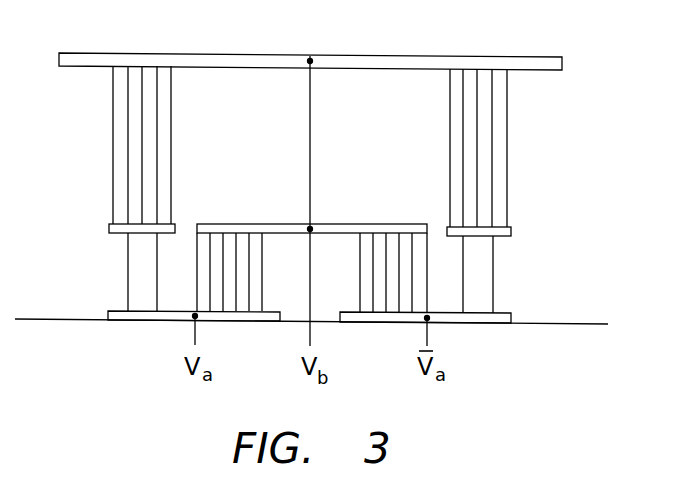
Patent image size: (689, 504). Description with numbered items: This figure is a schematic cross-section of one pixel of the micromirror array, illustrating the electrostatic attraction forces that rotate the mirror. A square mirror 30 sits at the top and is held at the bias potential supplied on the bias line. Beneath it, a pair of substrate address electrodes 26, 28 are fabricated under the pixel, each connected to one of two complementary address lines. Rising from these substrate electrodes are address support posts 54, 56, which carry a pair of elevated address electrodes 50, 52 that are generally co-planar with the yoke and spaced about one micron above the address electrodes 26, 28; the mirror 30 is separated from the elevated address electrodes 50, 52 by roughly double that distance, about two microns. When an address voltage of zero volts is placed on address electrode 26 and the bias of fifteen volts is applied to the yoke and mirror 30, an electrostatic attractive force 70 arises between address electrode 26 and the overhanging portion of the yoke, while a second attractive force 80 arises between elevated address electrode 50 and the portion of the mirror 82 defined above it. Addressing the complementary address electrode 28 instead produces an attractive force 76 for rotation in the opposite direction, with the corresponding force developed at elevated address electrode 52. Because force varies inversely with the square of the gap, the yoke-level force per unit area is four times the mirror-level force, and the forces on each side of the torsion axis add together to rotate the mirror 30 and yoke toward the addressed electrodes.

The mirror 30 is at (84, 54).
The address electrode 26 is at (108, 312).
The address electrode 28 is at (509, 311).
The elevated address electrode 50 is at (109, 229).
The elevated address electrode 52 is at (511, 231).
The address support post 54 is at (128, 272).
The address support post 56 is at (493, 270).
The electrostatic attraction force 70 is at (262, 248).
The electrostatic attraction force 76 is at (358, 248).
The electrostatic attraction force 80 is at (172, 164).
The portion of mirror 82 is at (450, 163).